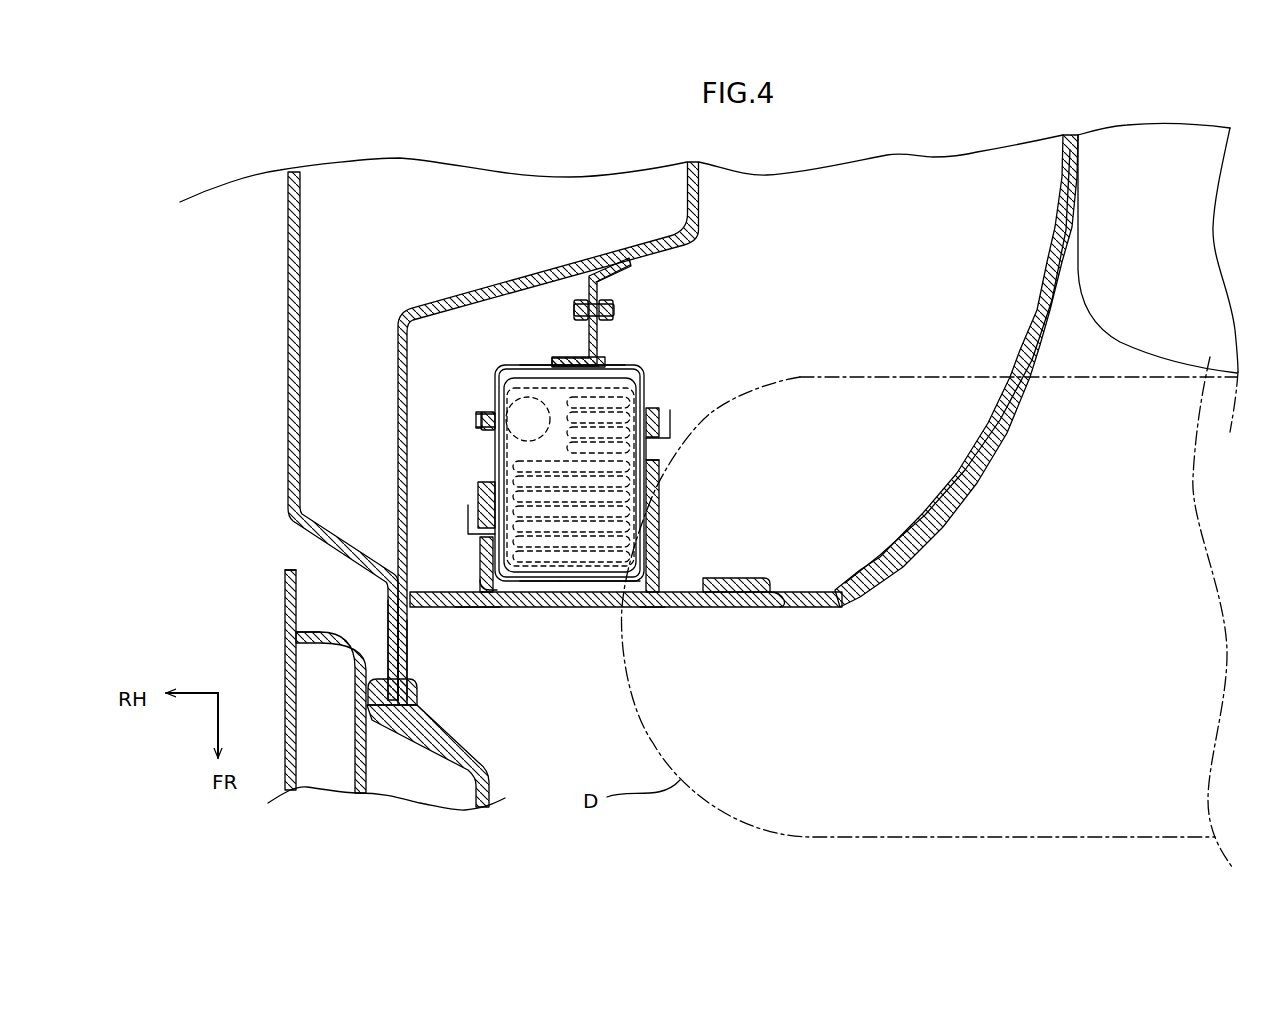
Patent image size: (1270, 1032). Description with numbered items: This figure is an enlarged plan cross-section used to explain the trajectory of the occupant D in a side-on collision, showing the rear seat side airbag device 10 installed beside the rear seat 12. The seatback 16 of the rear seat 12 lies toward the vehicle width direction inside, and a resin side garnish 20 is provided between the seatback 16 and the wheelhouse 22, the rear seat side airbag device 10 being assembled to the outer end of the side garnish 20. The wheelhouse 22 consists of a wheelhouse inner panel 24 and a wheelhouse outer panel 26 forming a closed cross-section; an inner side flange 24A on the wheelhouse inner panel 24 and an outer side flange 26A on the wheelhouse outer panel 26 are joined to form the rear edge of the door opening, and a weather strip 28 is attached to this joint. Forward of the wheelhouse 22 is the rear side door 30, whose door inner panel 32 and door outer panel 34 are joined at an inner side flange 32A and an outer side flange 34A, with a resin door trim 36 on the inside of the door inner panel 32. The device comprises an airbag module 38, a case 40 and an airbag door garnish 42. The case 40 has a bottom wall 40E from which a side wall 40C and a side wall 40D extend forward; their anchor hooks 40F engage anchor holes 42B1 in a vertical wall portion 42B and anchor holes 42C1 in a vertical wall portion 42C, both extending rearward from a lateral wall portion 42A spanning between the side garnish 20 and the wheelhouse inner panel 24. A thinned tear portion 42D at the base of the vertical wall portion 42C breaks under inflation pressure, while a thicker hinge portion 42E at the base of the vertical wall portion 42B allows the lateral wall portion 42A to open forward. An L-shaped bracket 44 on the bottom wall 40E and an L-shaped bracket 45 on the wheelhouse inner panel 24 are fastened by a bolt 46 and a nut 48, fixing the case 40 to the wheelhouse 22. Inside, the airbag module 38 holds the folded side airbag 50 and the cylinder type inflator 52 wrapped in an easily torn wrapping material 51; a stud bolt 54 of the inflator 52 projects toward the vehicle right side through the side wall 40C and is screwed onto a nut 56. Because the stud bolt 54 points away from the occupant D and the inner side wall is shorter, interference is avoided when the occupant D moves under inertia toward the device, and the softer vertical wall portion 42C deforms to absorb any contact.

The rear seat side airbag device 10 is at (764, 306).
The rear seat 12 is at (1157, 296).
The seatback 16 is at (1140, 352).
The side garnish 20 is at (960, 514).
The wheelhouse 22 is at (503, 138).
The wheelhouse inner panel 24 is at (513, 282).
The inner side flange 24A is at (407, 640).
The wheelhouse outer panel 26 is at (303, 257).
The outer side flange 26A is at (388, 643).
The weather strip 28 is at (418, 692).
The rear side door 30 is at (233, 822).
The door inner panel 32 is at (356, 770).
The inner side flange 32A is at (298, 630).
The door outer panel 34 is at (285, 770).
The outer side flange 34A is at (284, 585).
The door trim 36 is at (484, 757).
The airbag module 38 is at (601, 584).
The case 40 is at (497, 364).
The side wall 40C is at (488, 440).
The side wall 40D is at (646, 378).
The bottom wall 40E is at (605, 358).
The anchor hooks 40F is at (468, 518).
The airbag door garnish 42 is at (589, 561).
The lateral wall portion 42A is at (725, 607).
The vertical wall portion 42B is at (481, 584).
The anchor holes 42B1 is at (472, 568).
The vertical wall portion 42C is at (661, 505).
The anchor holes 42C1 is at (660, 470).
The tear portion 42D is at (649, 607).
The hinge portion 42E is at (498, 607).
The L-shaped bracket 44 is at (558, 357).
The L-shaped bracket 45 is at (618, 266).
The bolt 46 is at (615, 313).
The nut 48 is at (592, 290).
The side airbag 50 is at (628, 560).
The wrapping material 51 is at (540, 584).
The inflator 52 is at (543, 395).
The stud bolt 54 is at (484, 423).
The nut 56 is at (481, 412).